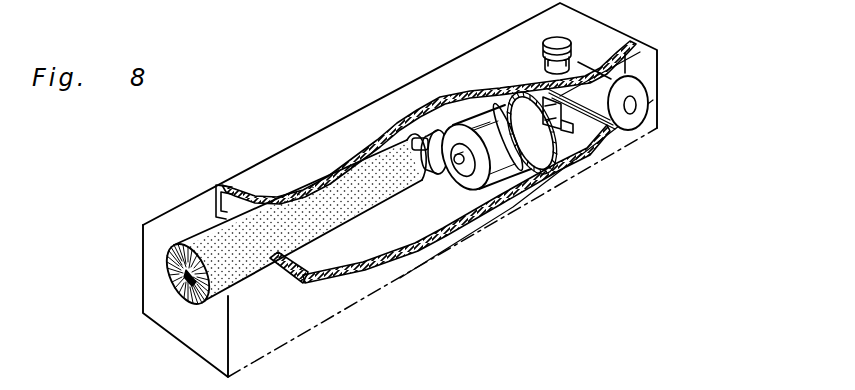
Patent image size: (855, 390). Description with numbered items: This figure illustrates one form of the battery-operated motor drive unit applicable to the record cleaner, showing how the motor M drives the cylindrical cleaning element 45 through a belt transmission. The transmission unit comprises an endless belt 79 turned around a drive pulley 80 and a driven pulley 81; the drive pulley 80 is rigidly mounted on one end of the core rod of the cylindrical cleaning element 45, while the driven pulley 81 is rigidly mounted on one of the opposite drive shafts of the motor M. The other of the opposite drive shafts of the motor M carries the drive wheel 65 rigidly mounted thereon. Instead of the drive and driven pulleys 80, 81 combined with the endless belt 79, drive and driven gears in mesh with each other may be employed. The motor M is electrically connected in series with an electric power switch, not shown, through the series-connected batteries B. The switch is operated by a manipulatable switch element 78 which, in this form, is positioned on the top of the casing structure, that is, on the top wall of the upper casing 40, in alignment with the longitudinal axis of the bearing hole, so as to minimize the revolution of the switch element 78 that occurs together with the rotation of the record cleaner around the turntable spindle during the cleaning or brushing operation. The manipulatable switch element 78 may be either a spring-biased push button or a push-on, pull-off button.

The upper casing 40 is at (358, 0).
The cylindrical cleaning element 45 is at (227, 237).
The driven pulley 81 is at (417, 128).
The motor M is at (507, 180).
The drive pulley 80 is at (472, 165).
The endless belt 79 is at (442, 172).
The drive wheel 65 is at (547, 116).
The batteries B is at (640, 89).
The manipulatable switch element 78 is at (565, 42).